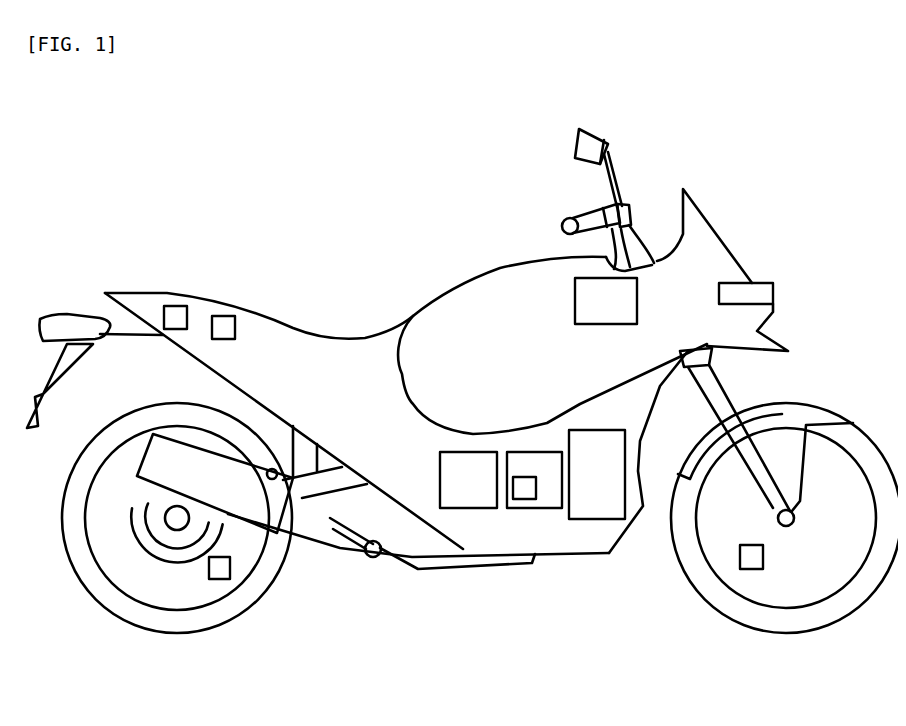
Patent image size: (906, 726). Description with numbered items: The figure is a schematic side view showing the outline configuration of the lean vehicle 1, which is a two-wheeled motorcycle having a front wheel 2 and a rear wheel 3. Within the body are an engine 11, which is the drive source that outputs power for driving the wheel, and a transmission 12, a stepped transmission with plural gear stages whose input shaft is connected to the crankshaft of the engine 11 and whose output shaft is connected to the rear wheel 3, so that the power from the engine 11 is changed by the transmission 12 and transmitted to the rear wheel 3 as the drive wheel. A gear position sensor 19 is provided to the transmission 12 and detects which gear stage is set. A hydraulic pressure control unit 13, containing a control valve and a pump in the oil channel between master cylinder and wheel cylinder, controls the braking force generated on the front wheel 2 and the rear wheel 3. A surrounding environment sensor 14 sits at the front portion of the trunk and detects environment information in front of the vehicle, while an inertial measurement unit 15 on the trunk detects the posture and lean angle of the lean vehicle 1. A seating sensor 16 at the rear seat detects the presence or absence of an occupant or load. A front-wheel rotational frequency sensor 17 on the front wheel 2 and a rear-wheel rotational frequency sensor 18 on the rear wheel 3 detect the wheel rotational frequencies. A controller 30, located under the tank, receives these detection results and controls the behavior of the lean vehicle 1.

The lean vehicle 1 is at (790, 153).
The front wheel 2 is at (812, 630).
The rear wheel 3 is at (152, 630).
The engine 11 is at (602, 518).
The transmission 12 is at (550, 507).
The hydraulic pressure control unit 13 is at (470, 507).
The surrounding environment sensor 14 is at (775, 293).
The inertial measurement unit 15 is at (176, 305).
The seating sensor 16 is at (223, 315).
The front-wheel rotational frequency sensor 17 is at (750, 568).
The rear-wheel rotational frequency sensor 18 is at (218, 578).
The gear position sensor 19 is at (526, 498).
The controller 30 is at (598, 277).